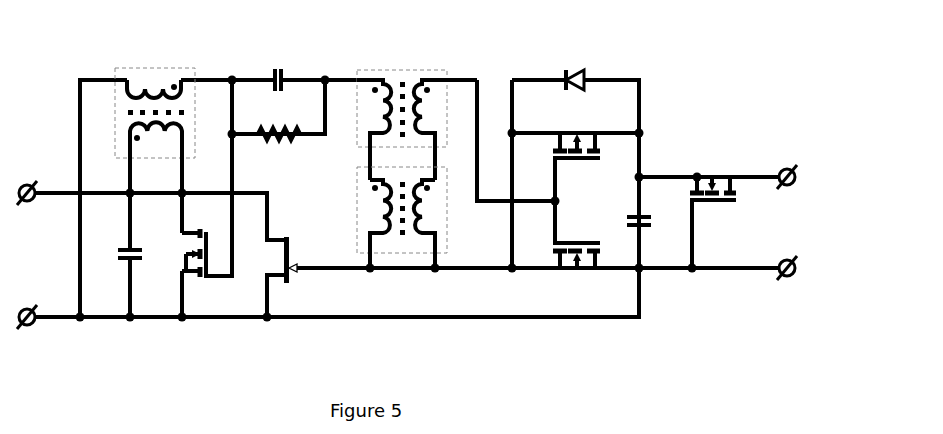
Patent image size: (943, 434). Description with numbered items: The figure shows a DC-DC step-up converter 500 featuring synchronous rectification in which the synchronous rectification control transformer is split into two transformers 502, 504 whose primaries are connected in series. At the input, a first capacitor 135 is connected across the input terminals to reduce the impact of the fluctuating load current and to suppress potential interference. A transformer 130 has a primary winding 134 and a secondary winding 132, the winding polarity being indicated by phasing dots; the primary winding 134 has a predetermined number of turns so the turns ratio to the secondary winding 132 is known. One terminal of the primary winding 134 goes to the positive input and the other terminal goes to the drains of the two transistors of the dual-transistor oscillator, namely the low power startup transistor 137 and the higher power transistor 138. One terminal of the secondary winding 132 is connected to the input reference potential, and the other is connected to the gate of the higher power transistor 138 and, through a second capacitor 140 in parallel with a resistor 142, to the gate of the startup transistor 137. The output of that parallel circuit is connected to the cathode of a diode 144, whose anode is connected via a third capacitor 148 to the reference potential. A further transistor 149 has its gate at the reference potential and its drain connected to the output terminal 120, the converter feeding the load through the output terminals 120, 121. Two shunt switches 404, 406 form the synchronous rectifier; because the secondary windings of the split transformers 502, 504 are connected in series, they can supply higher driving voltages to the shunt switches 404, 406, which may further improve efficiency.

The positive output terminal 120 is at (781, 168).
The negative output terminal 121 is at (775, 274).
The transformer 130 is at (130, 68).
The secondary winding 132 is at (110, 80).
The primary winding 134 is at (133, 125).
The capacitor C1 135 is at (135, 258).
The low power startup transistor J1 137 is at (273, 277).
The higher power transistor M1 138 is at (208, 252).
The capacitor C2 140 is at (280, 68).
The resistor R1 142 is at (269, 140).
The diode D1 144 is at (578, 72).
The capacitor C3 148 is at (644, 214).
The transistor M4 149 is at (705, 177).
The shunt switch M2 404 is at (593, 273).
The shunt switch M3 406 is at (587, 140).
The DC-DC step-up converter 500 is at (391, 390).
The transformer TF2A 502 is at (415, 68).
The transformer TF2B 504 is at (440, 244).